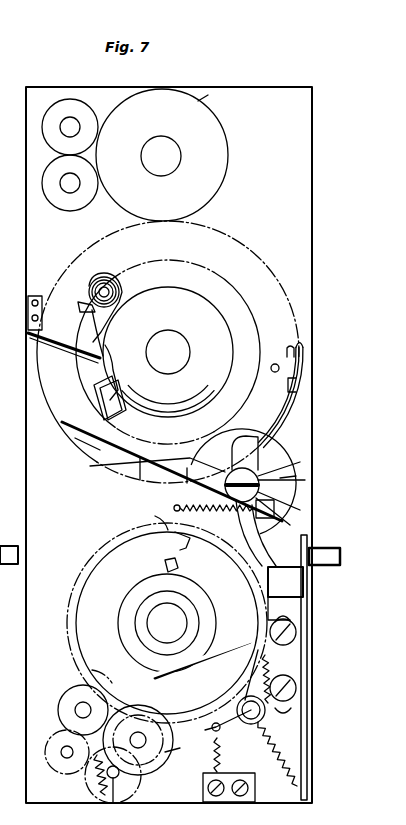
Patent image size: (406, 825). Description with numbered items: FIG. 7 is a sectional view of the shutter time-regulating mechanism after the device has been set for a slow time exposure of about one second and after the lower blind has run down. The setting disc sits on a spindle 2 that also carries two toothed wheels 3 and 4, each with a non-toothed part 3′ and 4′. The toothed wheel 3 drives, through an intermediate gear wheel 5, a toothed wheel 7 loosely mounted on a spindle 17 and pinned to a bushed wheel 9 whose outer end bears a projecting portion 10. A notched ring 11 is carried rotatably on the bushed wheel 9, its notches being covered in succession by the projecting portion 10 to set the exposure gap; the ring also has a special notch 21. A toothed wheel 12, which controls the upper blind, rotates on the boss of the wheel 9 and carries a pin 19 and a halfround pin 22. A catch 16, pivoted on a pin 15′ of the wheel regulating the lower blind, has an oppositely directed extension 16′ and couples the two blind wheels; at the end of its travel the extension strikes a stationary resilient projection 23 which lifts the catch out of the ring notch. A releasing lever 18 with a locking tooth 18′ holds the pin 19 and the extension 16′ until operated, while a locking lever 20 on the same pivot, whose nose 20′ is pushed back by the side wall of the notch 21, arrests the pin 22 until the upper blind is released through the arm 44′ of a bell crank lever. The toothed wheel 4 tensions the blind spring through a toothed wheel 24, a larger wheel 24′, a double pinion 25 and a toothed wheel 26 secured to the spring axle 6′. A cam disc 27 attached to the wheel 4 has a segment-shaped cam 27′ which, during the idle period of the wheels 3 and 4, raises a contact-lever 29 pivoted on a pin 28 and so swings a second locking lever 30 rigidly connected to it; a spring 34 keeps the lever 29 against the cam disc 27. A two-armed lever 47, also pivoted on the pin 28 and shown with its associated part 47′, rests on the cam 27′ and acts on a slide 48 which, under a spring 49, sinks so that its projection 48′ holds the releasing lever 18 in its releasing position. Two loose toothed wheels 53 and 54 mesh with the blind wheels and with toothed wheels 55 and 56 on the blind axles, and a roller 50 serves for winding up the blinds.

The spindle 2 is at (147, 622).
The toothed wheel 3 is at (68, 645).
The non-toothed part of wheel 3 3′ is at (152, 516).
The toothed wheel 4 is at (205, 510).
The non-toothed part of wheel 4 4′ is at (90, 670).
The intermediate gear wheel 5 is at (282, 452).
The axle of the spring 6′ is at (108, 780).
The toothed wheel 7 is at (166, 263).
The bushed wheel 9 is at (170, 406).
The projecting portion 10 is at (190, 299).
The notched ring 11 is at (113, 362).
The toothed wheel 12 is at (244, 240).
The pin 15′ is at (106, 284).
The catch 16 is at (92, 355).
The extension of the catch 16′ is at (68, 350).
The spindle 17 is at (181, 346).
The releasing lever 18 is at (303, 406).
The locking tooth 18′ is at (303, 348).
The pin 19 is at (280, 368).
The locking lever 20 is at (150, 472).
The nose 20′ is at (98, 396).
The special notch 21 is at (122, 388).
The halfround pin 22 is at (100, 455).
The stationary resilient projection 23 is at (28, 308).
The toothed wheel 24 is at (172, 734).
The toothed wheel of greater diameter 24′ is at (180, 748).
The double pinion 25 is at (58, 712).
The toothed wheel 26 is at (45, 760).
The cam disc 27 is at (118, 613).
The segment-shaped cam 27′ is at (165, 563).
The pin 28 is at (253, 722).
The contact-lever 29 is at (174, 540).
The second locking lever 30 is at (243, 690).
The spring 34 is at (220, 755).
The arm of the bell crank lever 44′ is at (292, 530).
The two armed lever 47 is at (182, 664).
The spring 47′ is at (290, 718).
The slide 48 is at (294, 650).
The projection on the slide 48′ is at (304, 583).
The spring 49 is at (45, 753).
The roller 50 is at (174, 152).
The loose toothed wheel 53 is at (182, 92).
The loose toothed wheel 54 is at (203, 106).
The toothed wheel 55 is at (70, 99).
The toothed wheel 56 is at (42, 183).